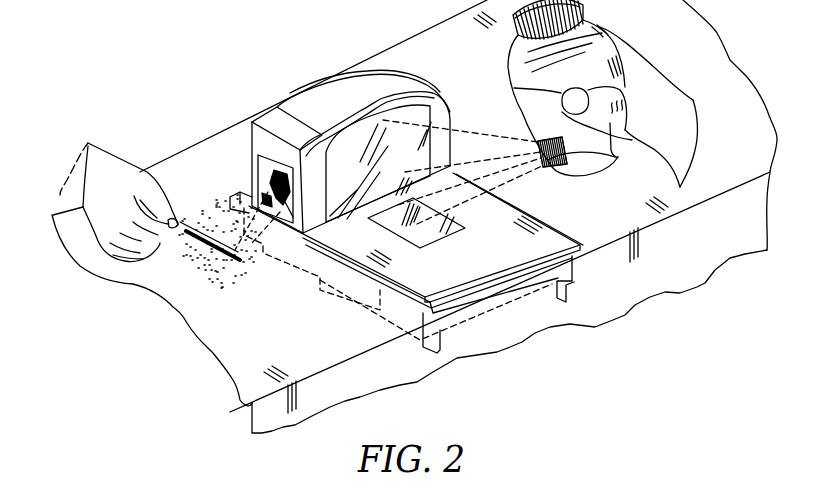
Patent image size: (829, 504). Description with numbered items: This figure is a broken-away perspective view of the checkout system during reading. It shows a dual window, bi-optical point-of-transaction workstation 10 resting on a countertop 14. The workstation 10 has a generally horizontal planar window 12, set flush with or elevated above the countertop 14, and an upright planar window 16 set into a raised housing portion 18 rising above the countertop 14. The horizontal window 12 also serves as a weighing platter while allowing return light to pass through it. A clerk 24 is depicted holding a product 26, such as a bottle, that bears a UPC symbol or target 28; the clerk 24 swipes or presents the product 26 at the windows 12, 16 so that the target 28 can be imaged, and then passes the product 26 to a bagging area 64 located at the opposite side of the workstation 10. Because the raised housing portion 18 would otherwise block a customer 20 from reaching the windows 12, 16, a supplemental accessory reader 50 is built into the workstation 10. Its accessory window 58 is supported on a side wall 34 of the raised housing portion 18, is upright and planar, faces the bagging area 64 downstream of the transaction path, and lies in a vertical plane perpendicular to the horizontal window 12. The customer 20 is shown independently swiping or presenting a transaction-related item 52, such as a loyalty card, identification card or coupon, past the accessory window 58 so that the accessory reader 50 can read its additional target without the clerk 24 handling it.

The point-of-transaction workstation 10 is at (419, 72).
The horizontal planar window 12 is at (430, 240).
The countertop 14 is at (600, 237).
The upright planar window 16 is at (355, 140).
The raised housing portion 18 is at (443, 110).
The customer 20 is at (107, 173).
The clerk 24 is at (677, 100).
The product 26 is at (597, 53).
The UPC symbol 28 is at (590, 158).
The side wall 34 is at (247, 183).
The accessory reader 50 is at (274, 131).
The transaction-related item 52 is at (237, 267).
The accessory window 58 is at (261, 188).
The bagging area 64 is at (200, 305).